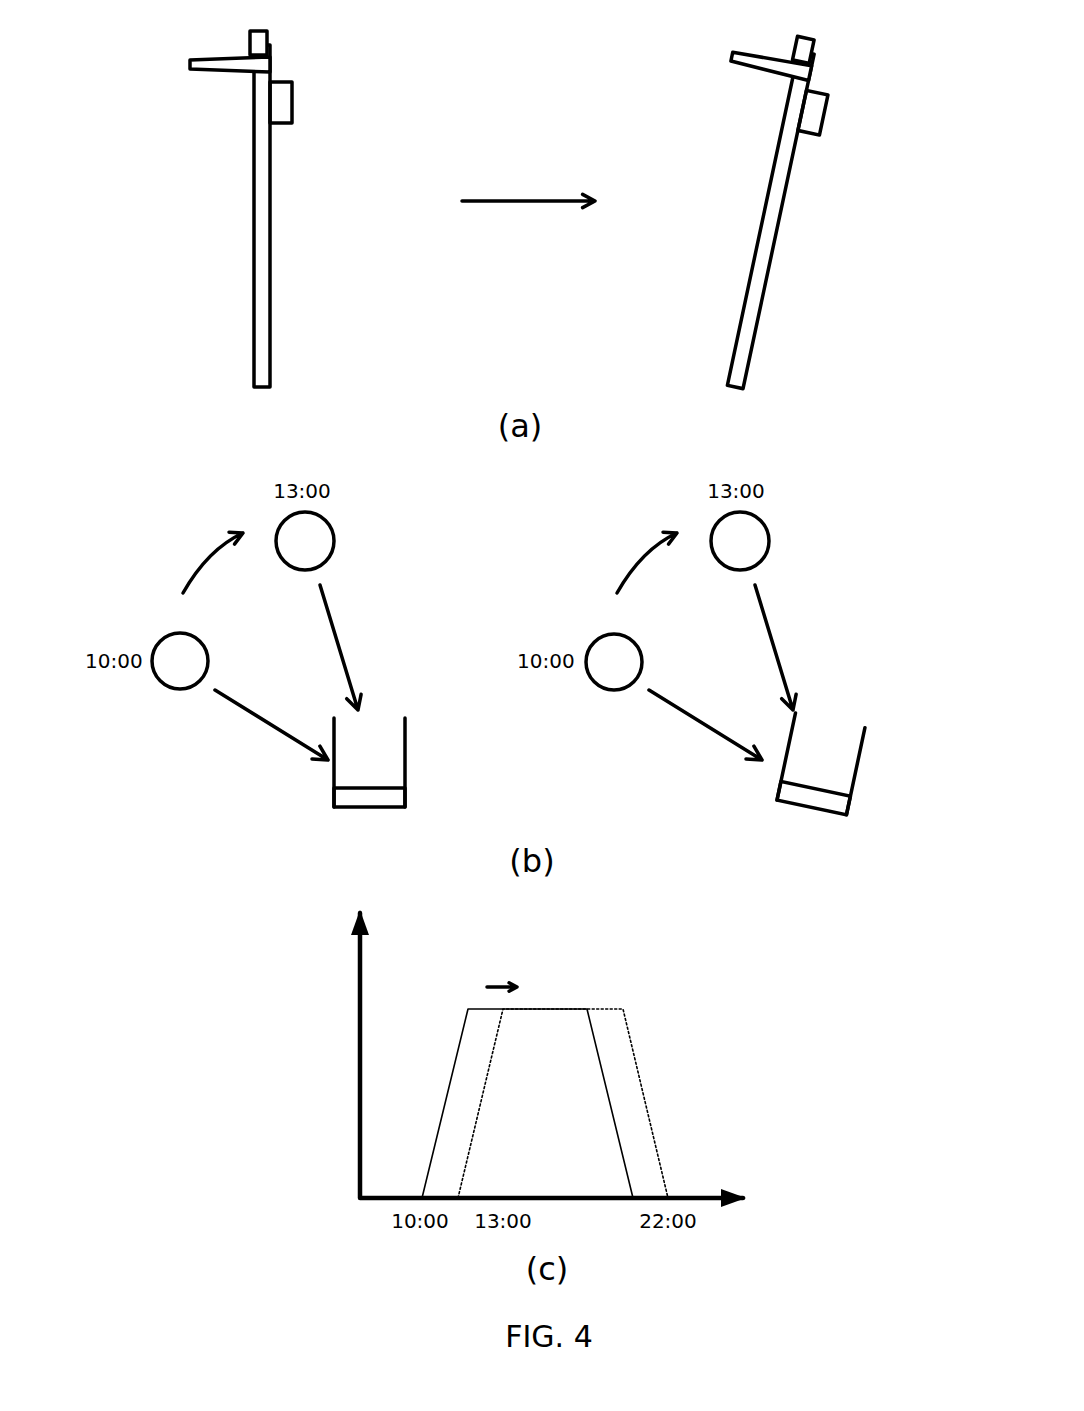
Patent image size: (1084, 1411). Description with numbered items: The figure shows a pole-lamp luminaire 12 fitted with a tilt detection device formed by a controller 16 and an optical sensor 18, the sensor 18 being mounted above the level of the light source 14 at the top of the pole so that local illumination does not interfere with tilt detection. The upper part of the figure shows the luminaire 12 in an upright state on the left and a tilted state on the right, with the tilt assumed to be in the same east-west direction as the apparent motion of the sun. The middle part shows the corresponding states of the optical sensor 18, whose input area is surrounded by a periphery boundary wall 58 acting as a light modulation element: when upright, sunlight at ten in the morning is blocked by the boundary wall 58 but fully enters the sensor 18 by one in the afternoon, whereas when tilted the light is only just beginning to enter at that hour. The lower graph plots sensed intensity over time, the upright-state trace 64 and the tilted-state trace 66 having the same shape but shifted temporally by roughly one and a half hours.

The luminaire 12 is at (270, 275).
The light source 14 is at (228, 58).
The controller 16 is at (292, 103).
The optical sensor 18 is at (251, 31).
The periphery boundary wall 58 is at (405, 742).
The intensity-time function for upright state 64 is at (464, 1028).
The intensity-time function for tilted state 66 is at (477, 1127).